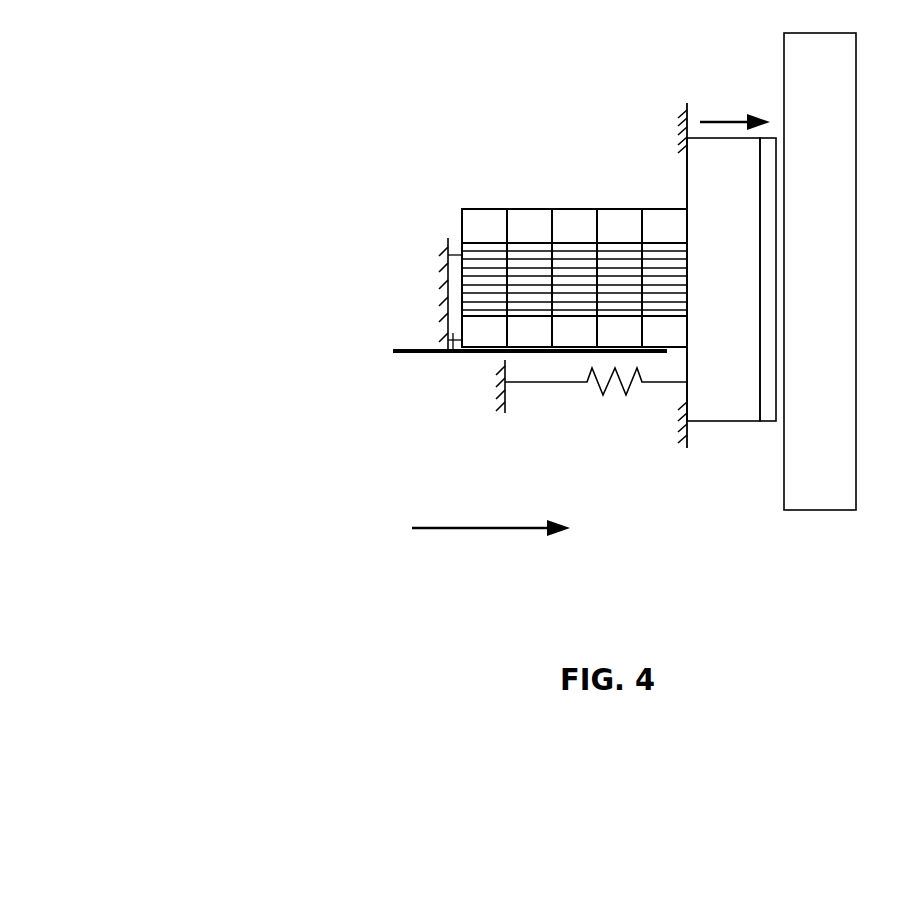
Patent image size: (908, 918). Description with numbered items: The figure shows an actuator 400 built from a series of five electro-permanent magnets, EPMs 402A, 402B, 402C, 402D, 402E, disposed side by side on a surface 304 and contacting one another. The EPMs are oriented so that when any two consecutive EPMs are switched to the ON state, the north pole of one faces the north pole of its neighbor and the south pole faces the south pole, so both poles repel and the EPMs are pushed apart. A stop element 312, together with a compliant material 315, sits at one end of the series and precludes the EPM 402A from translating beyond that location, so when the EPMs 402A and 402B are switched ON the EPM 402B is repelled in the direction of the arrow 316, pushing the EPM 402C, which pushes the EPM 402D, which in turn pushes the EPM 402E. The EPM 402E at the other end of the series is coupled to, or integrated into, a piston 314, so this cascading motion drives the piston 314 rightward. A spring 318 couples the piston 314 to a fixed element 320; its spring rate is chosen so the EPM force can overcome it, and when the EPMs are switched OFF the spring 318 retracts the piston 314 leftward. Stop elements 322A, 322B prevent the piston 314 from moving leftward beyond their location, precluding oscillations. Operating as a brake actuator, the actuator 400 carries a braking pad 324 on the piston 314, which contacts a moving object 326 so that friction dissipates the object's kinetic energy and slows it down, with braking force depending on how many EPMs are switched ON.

The actuator 400 is at (214, 96).
The electro-permanent magnet 402A is at (457, 240).
The electro-permanent magnet 402B is at (500, 240).
The electro-permanent magnet 402C is at (549, 240).
The electro-permanent magnet 402D is at (596, 240).
The electro-permanent magnet 402E is at (642, 240).
The surface 304 is at (405, 353).
The stop element 312 is at (447, 320).
The piston 314 is at (728, 422).
The compliant material 315 is at (451, 351).
The arrow 316 is at (480, 530).
The spring 318 is at (597, 383).
The fixed element 320 is at (500, 405).
The stop element 322A is at (683, 126).
The stop element 322B is at (683, 435).
The braking pad 324 is at (773, 422).
The moving object 326 is at (840, 512).